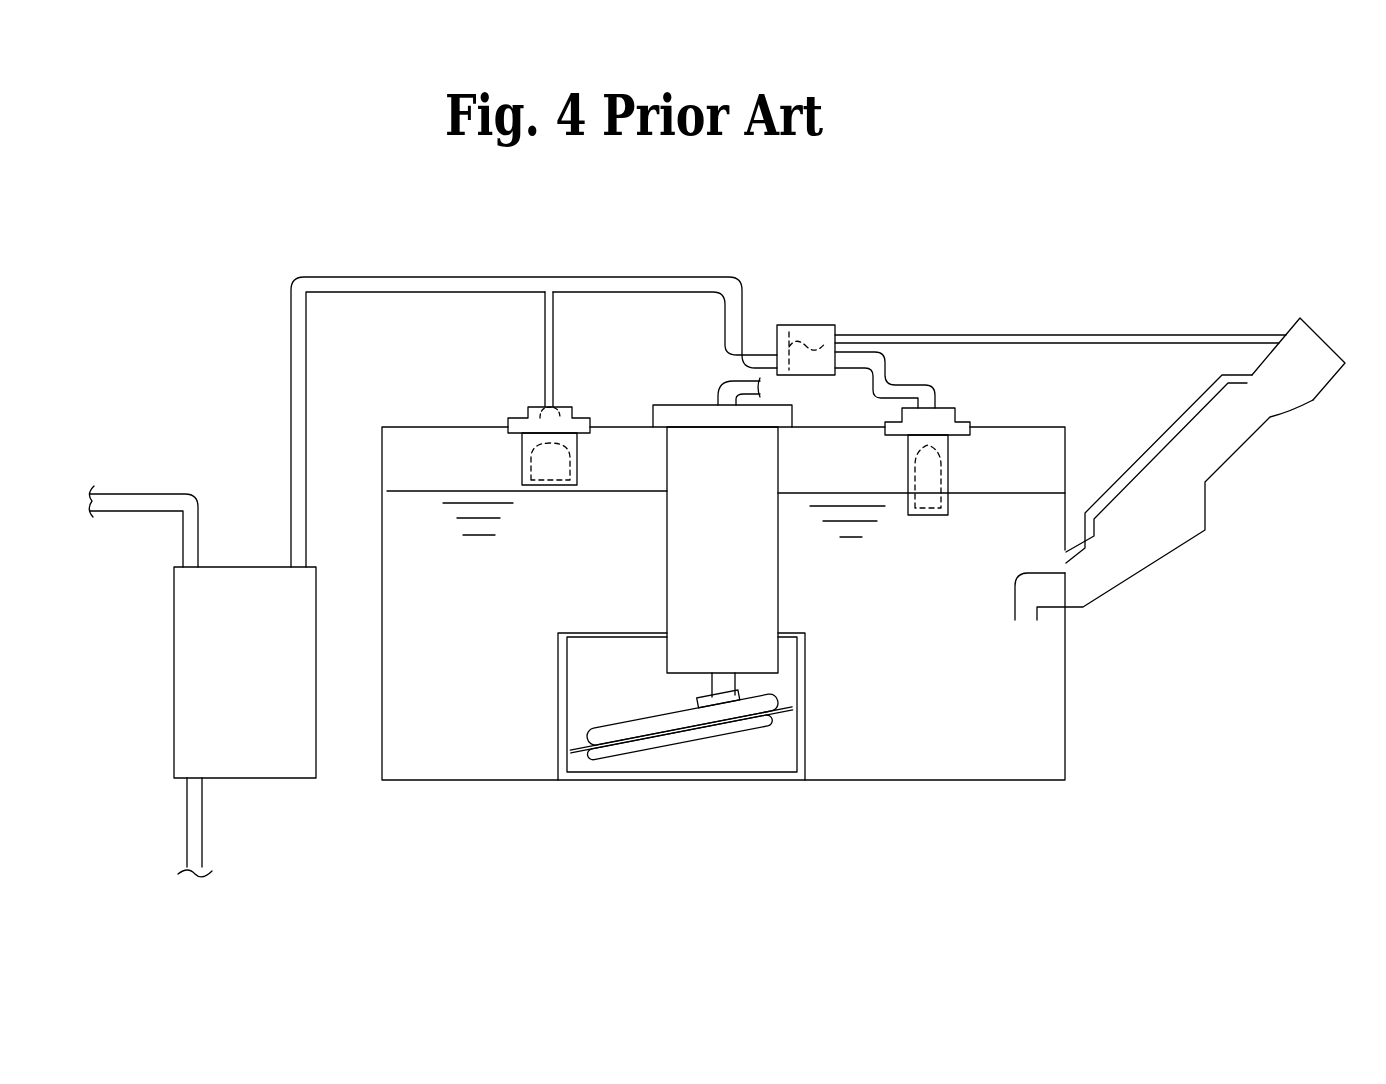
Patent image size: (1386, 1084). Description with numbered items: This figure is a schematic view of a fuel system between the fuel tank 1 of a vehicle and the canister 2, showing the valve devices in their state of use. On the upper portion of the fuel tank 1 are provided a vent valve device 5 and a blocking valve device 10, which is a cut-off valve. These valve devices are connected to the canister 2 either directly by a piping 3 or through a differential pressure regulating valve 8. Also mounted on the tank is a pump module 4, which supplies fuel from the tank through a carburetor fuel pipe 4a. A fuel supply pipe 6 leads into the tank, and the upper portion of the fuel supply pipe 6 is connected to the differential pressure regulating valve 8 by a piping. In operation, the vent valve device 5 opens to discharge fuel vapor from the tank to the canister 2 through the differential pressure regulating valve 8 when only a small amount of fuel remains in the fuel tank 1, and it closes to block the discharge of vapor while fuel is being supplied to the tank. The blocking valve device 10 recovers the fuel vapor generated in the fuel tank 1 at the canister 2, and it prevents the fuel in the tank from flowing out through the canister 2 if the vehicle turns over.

The fuel tank 1 is at (1034, 420).
The canister 2 is at (257, 697).
The piping 3 is at (451, 280).
The pump module 4 is at (800, 594).
The carburetor fuel pipe 4a is at (736, 383).
The vent valve device 5 is at (962, 395).
The fuel supply pipe 6 is at (1313, 400).
The differential pressure regulating valve 8 is at (820, 323).
The blocking valve device 10 is at (514, 396).